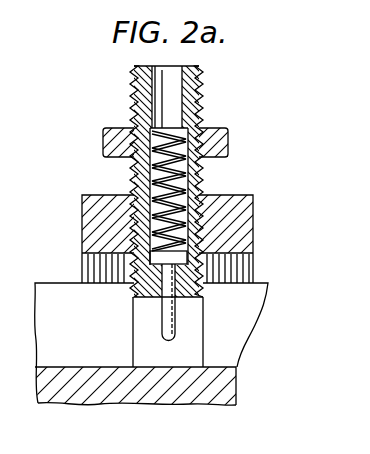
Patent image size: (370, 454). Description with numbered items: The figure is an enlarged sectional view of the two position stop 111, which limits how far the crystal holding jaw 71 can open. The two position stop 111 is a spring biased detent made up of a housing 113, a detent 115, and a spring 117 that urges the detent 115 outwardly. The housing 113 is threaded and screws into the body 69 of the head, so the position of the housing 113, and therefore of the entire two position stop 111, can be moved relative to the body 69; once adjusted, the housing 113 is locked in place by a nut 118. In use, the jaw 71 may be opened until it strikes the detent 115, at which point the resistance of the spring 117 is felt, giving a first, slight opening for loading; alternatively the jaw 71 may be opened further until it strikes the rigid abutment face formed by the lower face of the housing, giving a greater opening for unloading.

The two position stop 111 is at (240, 102).
The housing 113 is at (143, 80).
The nut 118 is at (113, 138).
The spring 117 is at (182, 170).
The body 69 is at (95, 217).
The detent 115 is at (165, 314).
The crystal holding jaw 71 is at (92, 379).